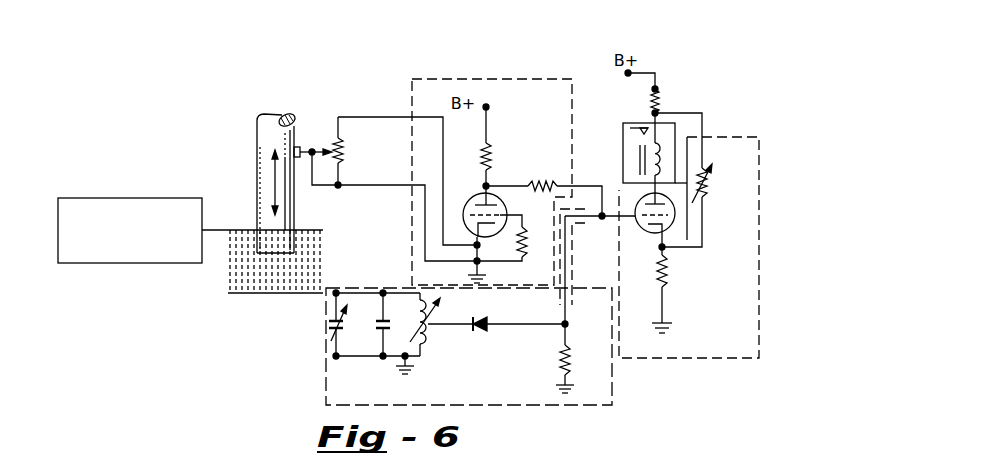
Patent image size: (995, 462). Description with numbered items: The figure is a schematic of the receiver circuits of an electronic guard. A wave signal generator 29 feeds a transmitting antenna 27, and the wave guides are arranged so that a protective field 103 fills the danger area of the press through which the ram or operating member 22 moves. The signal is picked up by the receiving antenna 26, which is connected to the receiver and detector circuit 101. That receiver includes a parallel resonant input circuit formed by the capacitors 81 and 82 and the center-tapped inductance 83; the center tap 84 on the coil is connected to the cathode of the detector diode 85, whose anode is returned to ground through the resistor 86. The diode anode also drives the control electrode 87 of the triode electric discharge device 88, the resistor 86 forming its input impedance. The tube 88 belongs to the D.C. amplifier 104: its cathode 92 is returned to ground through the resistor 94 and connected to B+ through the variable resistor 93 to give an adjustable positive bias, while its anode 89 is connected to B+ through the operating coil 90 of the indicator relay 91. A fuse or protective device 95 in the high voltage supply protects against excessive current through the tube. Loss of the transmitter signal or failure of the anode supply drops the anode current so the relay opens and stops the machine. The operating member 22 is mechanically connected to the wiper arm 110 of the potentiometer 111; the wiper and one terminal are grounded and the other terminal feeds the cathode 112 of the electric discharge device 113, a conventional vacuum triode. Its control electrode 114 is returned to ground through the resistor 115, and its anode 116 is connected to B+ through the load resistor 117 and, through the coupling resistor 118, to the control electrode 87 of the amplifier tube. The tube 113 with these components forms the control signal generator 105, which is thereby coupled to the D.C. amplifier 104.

The wave signal generator 29 is at (139, 205).
The ram or operating member 22 is at (262, 182).
The transmitting antenna 27 is at (240, 230).
The protective field 103 is at (240, 278).
The receiving antenna 26 is at (262, 295).
The wiper arm 110 is at (300, 145).
The potentiometer 111 is at (342, 147).
The control signal generator 105 is at (467, 78).
The load resistor 117 is at (488, 150).
The anode 116 is at (489, 195).
The electric discharge device 113 is at (493, 206).
The control electrode 114 is at (498, 214).
The cathode 112 is at (482, 228).
The resistor 115 is at (523, 252).
The coupling resistor 118 is at (544, 183).
The fuse or protective device 95 is at (661, 97).
The indicator relay 91 is at (664, 146).
The operating coil 90 is at (662, 160).
The triode electric discharge device 88 is at (664, 216).
The variable resistor 93 is at (706, 192).
The anode 89 is at (657, 205).
The control electrode 87 is at (636, 226).
The cathode 92 is at (658, 228).
The resistor 94 is at (667, 260).
The D.C. amplifier 104 is at (705, 357).
The receiver and detector circuit 101 is at (615, 392).
The capacitor 81 is at (330, 326).
The capacitor 82 is at (380, 333).
The center-tapped inductance 83 is at (428, 337).
The center tap 84 is at (433, 326).
The detector diode 85 is at (487, 331).
The resistor 86 is at (570, 354).